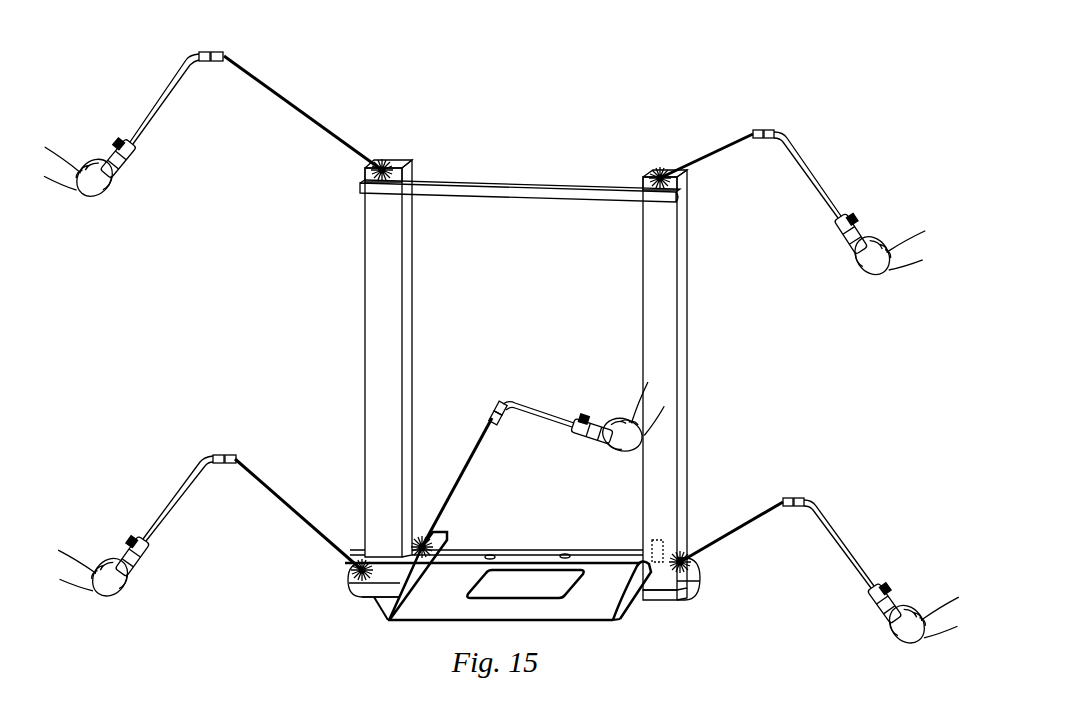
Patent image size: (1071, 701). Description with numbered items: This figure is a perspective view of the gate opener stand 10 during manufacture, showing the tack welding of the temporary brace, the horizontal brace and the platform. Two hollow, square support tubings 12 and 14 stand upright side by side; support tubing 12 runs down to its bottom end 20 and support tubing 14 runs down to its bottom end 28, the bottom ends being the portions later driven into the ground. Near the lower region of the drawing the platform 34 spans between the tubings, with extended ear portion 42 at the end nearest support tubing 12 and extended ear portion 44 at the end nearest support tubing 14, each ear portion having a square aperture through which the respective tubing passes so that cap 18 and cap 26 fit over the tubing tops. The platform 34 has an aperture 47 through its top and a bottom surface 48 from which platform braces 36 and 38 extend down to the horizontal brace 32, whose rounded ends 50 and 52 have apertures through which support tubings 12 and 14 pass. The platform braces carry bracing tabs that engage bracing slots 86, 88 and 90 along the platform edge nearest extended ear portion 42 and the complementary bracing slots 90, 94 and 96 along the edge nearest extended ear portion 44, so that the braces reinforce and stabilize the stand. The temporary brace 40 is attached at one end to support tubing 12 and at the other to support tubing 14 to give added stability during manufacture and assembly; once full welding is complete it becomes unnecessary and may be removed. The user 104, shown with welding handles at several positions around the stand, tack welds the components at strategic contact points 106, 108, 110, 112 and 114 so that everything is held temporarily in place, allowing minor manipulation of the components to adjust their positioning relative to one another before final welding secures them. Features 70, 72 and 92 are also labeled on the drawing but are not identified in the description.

The gate opener stand 10 is at (795, 366).
The support tubing 12 is at (688, 365).
The support tubing 14 is at (365, 310).
The cap 18 is at (665, 603).
The bottom end 20 is at (688, 197).
The cap 26 is at (350, 598).
The bottom end 28 is at (365, 210).
The horizontal brace 32 is at (470, 550).
The platform 34 is at (445, 621).
The platform brace 36 is at (612, 597).
The platform brace 38 is at (383, 602).
The temporary brace 40 is at (520, 183).
The extended ear portion 42 is at (700, 590).
The extended ear portion 44 is at (350, 583).
The aperture 47 is at (530, 590).
The bottom surface 48 is at (460, 607).
The rounded end 50 is at (695, 562).
The rounded end 52 is at (362, 560).
The hole 70 is at (567, 553).
The hole 72 is at (497, 556).
The bracing slot 86 is at (395, 612).
The bracing slot 88 is at (420, 585).
The bracing slot 90 is at (447, 548).
The second brace lower end 92 is at (620, 620).
The bracing slot 94 is at (630, 582).
The bracing slot 96 is at (652, 548).
The user 104 is at (112, 200).
The strategic contact point 106 is at (382, 165).
The strategic contact point 108 is at (657, 172).
The strategic contact point 110 is at (683, 556).
The strategic contact point 112 is at (422, 538).
The strategic contact point 114 is at (355, 568).